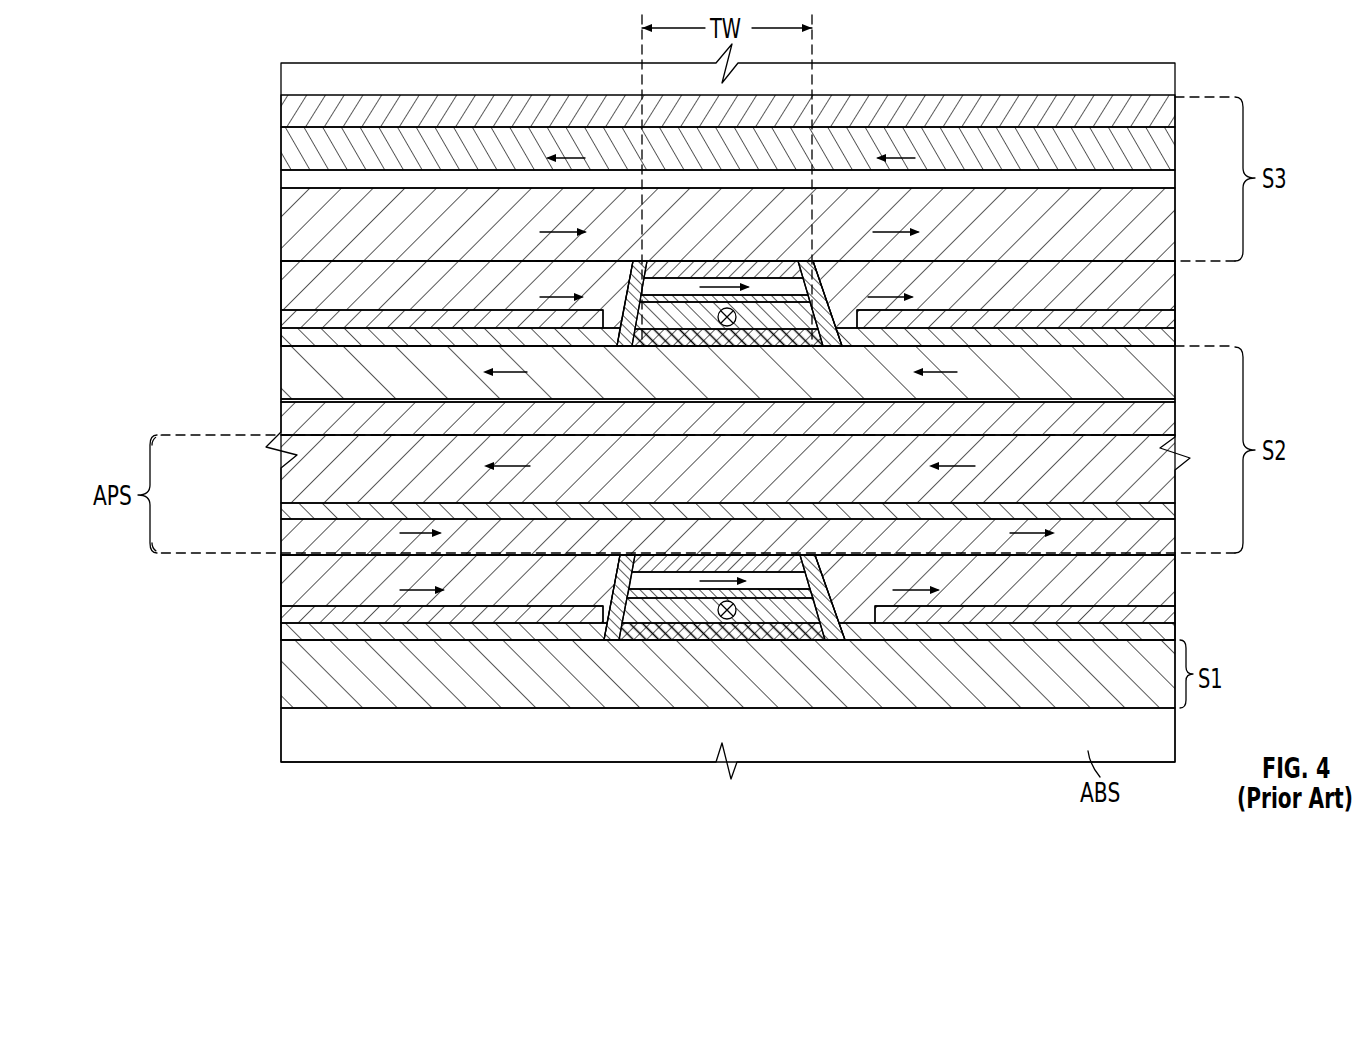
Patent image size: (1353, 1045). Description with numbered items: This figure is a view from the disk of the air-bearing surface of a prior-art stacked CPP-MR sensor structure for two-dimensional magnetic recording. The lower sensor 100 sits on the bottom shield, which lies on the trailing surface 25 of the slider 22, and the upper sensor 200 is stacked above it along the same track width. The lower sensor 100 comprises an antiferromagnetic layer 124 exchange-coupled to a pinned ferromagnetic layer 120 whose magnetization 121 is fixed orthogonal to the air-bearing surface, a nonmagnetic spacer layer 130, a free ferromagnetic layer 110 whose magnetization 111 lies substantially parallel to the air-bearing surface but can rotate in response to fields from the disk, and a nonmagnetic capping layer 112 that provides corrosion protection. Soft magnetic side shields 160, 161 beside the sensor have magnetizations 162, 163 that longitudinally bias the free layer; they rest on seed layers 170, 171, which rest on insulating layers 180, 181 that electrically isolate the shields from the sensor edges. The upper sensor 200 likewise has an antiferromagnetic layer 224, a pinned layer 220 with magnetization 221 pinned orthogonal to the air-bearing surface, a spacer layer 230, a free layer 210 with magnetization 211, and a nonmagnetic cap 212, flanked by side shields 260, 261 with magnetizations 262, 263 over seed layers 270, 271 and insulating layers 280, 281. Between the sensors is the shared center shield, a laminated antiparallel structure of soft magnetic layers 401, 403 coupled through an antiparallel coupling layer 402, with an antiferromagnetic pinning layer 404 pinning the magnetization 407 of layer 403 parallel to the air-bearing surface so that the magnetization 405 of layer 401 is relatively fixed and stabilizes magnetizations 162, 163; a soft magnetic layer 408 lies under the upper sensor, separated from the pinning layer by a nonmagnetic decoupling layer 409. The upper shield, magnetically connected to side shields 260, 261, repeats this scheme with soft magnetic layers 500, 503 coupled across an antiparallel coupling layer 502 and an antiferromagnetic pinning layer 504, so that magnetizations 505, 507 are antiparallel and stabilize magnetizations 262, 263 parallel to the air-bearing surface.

The slider 22 is at (348, 752).
The trailing surface 25 is at (288, 682).
The lower sensor 100 is at (811, 613).
The free ferromagnetic layer 110 is at (648, 568).
The magnetization direction 111 is at (685, 573).
The nonmagnetic capping layer 112 is at (738, 561).
The pinned ferromagnetic layer 120 is at (640, 630).
The magnetization direction 121 is at (727, 630).
The antiferromagnetic layer 124 is at (693, 630).
The nonmagnetic spacer layer 130 is at (770, 603).
The side shield 160 is at (693, 589).
The side shield 161 is at (1155, 570).
The magnetization 162 is at (425, 586).
The magnetization 163 is at (932, 586).
The seed layer 170 is at (300, 613).
The seed layer 171 is at (1170, 620).
The insulating layer 180 is at (283, 627).
The insulating layer 181 is at (1178, 636).
The upper sensor 200 is at (801, 295).
The free layer 210 is at (667, 275).
The magnetization 211 is at (738, 285).
The nonmagnetic cap 212 is at (740, 268).
The pinned layer 220 is at (638, 330).
The magnetization 221 is at (735, 328).
The antiferromagnetic layer 224 is at (693, 338).
The spacer layer 230 is at (648, 267).
The side shield 260 is at (693, 293).
The side shield 261 is at (1155, 282).
The magnetization 262 is at (548, 295).
The magnetization 263 is at (897, 293).
The seed layer 270 is at (470, 317).
The seed layer 271 is at (967, 318).
The insulating layer 280 is at (380, 342).
The insulating layer 281 is at (1060, 340).
The soft magnetic layer 401 is at (346, 549).
The antiparallel coupling layer 402 is at (281, 512).
The soft magnetic layer 403 is at (281, 466).
The antiferromagnetic pinning layer 404 is at (281, 427).
The magnetization 405 is at (420, 530).
The magnetization 407 is at (495, 463).
The soft magnetic layer 408 is at (281, 362).
The nonmagnetic decoupling layer 409 is at (281, 399).
The soft magnetic layer 500 is at (281, 215).
The antiparallel coupling layer 502 is at (1058, 170).
The soft magnetic layer 503 is at (281, 148).
The antiferromagnetic pinning layer 504 is at (281, 105).
The magnetization 505 is at (565, 230).
The magnetization 507 is at (556, 157).